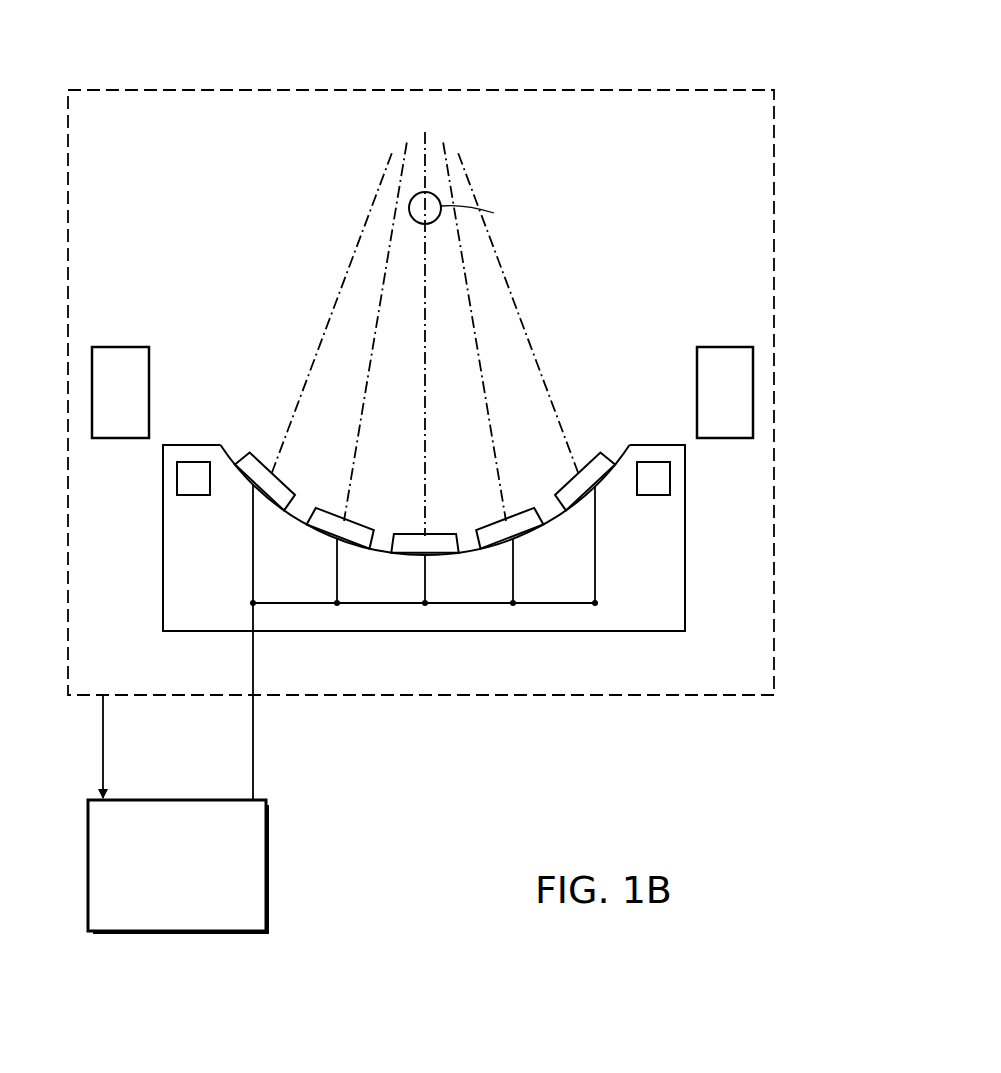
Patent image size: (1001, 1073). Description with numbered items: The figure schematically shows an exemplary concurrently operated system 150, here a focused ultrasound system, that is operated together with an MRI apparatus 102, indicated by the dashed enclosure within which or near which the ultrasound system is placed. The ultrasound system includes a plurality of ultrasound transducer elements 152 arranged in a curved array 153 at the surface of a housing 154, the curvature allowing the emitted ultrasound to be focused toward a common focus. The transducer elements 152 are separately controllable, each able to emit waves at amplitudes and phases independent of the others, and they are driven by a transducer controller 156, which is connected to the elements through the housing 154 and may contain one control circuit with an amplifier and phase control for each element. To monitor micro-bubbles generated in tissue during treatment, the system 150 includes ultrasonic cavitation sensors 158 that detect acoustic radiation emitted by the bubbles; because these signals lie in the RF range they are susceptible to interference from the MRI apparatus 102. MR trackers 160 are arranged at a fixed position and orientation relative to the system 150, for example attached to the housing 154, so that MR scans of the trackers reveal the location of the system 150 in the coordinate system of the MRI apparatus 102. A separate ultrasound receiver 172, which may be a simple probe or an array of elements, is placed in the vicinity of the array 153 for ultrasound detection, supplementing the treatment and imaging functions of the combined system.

The concurrently operated system 150 is at (577, 62).
The MRI apparatus 102 is at (306, 90).
The ultrasound transducer element 152 is at (616, 450).
The transducer array 153 is at (229, 450).
The housing 154 is at (423, 588).
The transducer controller 156 is at (158, 906).
The ultrasonic cavitation sensor 158 is at (100, 388).
The MR tracker 160 is at (185, 475).
The ultrasound receiver 172 is at (753, 385).